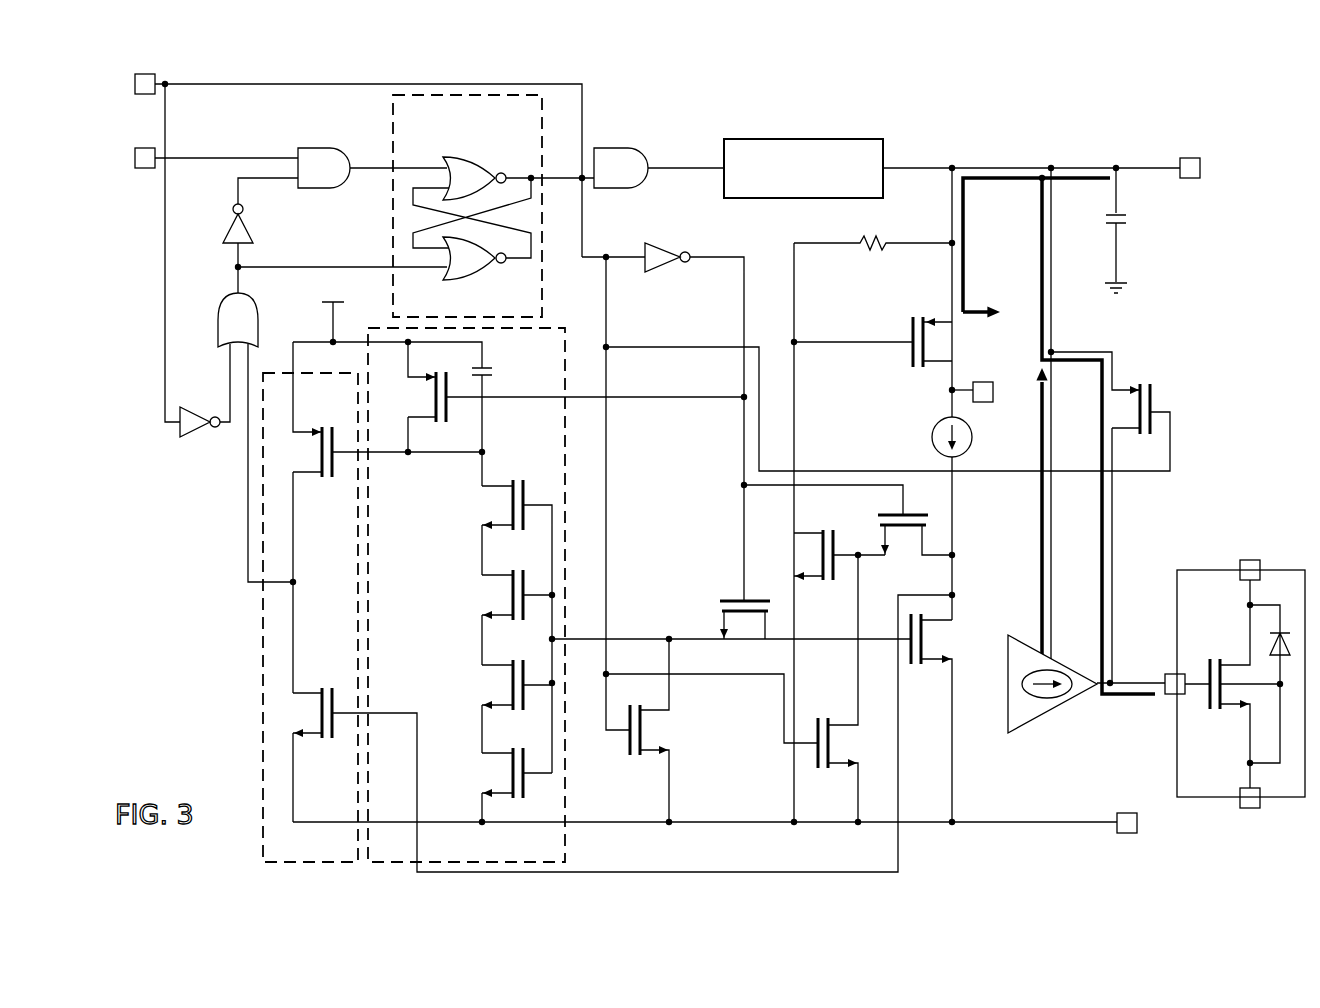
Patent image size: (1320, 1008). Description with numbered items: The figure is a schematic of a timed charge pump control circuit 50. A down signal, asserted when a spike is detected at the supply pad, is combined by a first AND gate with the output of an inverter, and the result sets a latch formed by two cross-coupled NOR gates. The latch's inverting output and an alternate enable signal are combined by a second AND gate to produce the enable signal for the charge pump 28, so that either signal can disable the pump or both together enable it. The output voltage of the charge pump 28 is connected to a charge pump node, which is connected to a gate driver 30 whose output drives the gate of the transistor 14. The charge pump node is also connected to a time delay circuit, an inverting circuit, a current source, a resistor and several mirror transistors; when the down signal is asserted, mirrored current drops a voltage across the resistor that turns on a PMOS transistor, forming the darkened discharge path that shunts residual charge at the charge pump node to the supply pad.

The timed charge pump control circuit 50 is at (1237, 110).
The charge pump 28 is at (800, 139).
The gate driver 30 is at (1052, 704).
The transistor 14 is at (1210, 570).